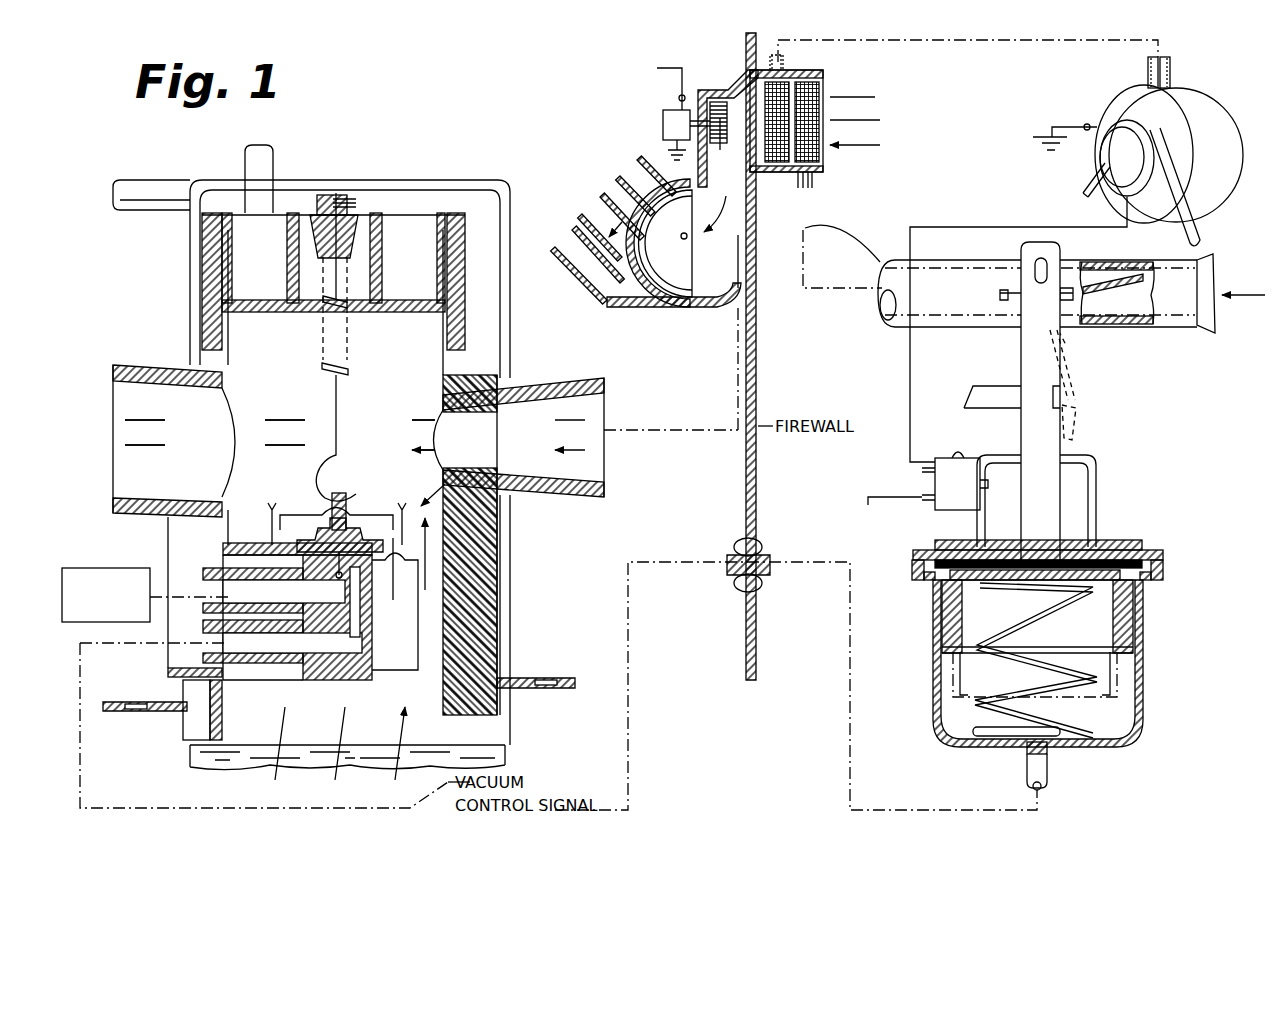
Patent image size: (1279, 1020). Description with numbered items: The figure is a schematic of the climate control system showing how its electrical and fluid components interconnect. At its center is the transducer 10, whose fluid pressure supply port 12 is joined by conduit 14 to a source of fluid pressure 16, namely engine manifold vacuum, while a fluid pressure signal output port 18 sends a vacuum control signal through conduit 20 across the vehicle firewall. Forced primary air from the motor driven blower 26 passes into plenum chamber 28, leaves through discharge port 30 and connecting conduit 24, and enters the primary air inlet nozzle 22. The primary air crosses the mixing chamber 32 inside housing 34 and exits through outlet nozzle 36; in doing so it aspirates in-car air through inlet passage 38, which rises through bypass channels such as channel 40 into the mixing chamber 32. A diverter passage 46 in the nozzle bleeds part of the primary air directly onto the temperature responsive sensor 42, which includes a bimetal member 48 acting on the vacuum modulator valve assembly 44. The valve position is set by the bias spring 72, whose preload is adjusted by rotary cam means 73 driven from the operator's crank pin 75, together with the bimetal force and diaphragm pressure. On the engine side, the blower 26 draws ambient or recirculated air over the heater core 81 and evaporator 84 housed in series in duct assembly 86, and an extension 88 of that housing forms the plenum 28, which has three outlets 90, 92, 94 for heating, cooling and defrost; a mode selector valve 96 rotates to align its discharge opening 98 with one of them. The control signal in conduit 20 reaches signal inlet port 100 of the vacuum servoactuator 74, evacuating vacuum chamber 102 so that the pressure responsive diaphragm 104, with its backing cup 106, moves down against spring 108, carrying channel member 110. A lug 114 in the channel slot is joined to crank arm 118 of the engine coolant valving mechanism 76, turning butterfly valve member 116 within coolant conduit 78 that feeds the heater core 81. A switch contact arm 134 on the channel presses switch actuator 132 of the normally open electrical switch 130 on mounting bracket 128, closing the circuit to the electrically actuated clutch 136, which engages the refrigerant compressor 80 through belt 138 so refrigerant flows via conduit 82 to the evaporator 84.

The transducer 10 is at (158, 328).
The fluid pressure supply port 12 is at (205, 583).
The conduit 14 is at (206, 618).
The source of fluid pressure 16 is at (108, 568).
The fluid pressure signal output port 18 is at (245, 673).
The conduit 20 is at (205, 652).
The primary air inlet nozzle 22 is at (601, 488).
The connecting conduit 24 is at (682, 214).
The motor driven blower 26 is at (700, 87).
The plenum chamber 28 is at (718, 206).
The discharge port 30 is at (742, 305).
The mixing chamber 32 is at (260, 367).
The housing 34 is at (456, 378).
The outlet nozzle 36 is at (160, 496).
The inlet passage 38 is at (445, 690).
The bypass channel 40 is at (387, 594).
The temperature responsive sensor 42 is at (290, 514).
The vacuum modulator valve assembly 44 is at (367, 526).
The diverter passage 46 is at (450, 483).
The bimetal member 48 is at (306, 515).
The bias spring 72 is at (342, 396).
The rotary cam means 73 is at (388, 234).
The vacuum servoactuator 74 is at (1152, 545).
The crank pin 75 is at (245, 165).
The engine coolant valving mechanism 76 is at (1126, 276).
The conduit 78 is at (832, 291).
The refrigerant compressor 80 is at (1229, 111).
The heater core 81 is at (828, 90).
The conduit 82 is at (1122, 45).
The evaporator 84 is at (758, 78).
The duct assembly 86 is at (791, 187).
The blower housing extension 88 is at (645, 302).
The heating discharge outlet 90 is at (563, 252).
The cooling discharge outlet 92 is at (603, 215).
The defrost discharge outlet 94 is at (638, 168).
The mode selector valve 96 is at (651, 240).
The discharge opening 98 is at (1163, 683).
The signal inlet port 100 is at (1027, 752).
The vacuum chamber 102 is at (1112, 708).
The pressure responsive diaphragm 104 is at (935, 673).
The backing cup 106 is at (952, 612).
The spring 108 is at (1085, 545).
The channel member 110 is at (1021, 429).
The lug 114 is at (1010, 292).
The butterfly valve member 116 is at (1136, 278).
The crank arm 118 is at (1085, 262).
The mounting bracket 128 is at (1094, 462).
The electrical switch 130 is at (924, 470).
The switch actuator 132 is at (960, 448).
The switch contact arm 134 is at (968, 395).
The electrically actuated clutch 136 is at (1113, 168).
The belt 138 is at (1201, 236).